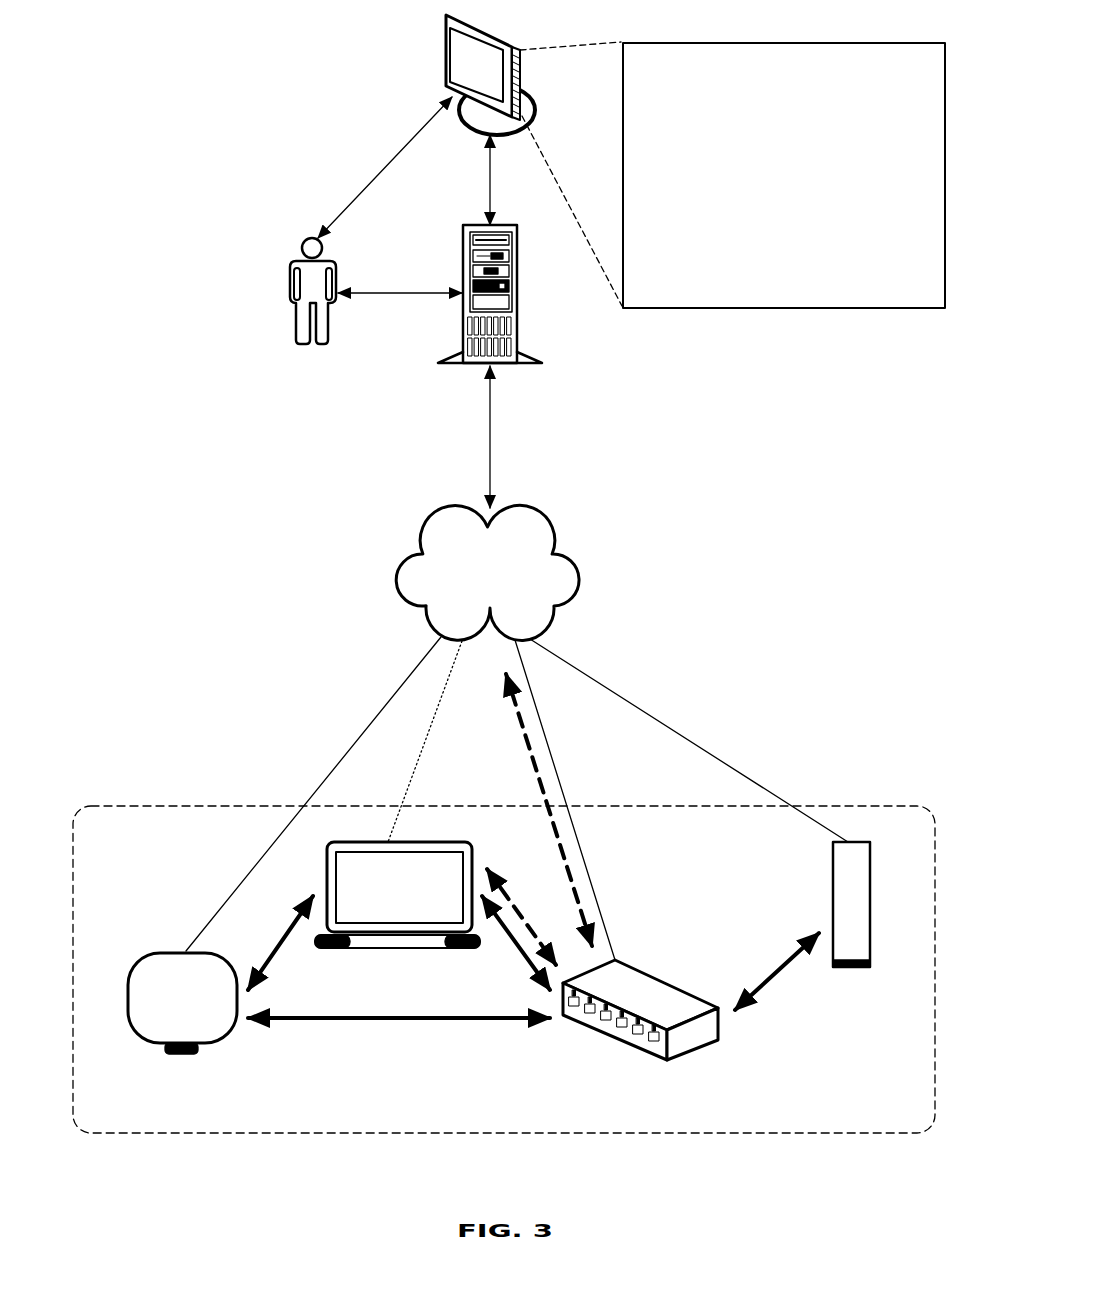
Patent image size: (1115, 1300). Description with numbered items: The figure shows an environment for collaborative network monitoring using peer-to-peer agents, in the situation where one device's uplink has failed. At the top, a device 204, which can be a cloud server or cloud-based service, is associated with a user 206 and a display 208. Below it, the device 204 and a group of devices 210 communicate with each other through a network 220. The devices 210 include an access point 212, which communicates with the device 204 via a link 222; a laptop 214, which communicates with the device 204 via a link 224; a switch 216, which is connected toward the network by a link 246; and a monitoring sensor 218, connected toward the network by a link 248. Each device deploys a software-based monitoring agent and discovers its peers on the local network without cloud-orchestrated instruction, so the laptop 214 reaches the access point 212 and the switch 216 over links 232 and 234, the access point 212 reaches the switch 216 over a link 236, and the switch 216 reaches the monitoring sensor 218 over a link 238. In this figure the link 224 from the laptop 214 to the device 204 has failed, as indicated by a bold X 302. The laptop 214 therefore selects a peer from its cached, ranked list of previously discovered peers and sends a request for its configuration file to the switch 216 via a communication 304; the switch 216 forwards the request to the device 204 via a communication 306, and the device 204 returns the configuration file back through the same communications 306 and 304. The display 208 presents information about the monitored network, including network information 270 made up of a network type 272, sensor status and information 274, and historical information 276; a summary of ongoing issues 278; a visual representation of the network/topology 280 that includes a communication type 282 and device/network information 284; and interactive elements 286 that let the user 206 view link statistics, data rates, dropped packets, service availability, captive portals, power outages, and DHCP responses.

The device 204 is at (441, 362).
The user 206 is at (290, 281).
The display 208 is at (442, 33).
The devices 210 is at (92, 1136).
The access point 212 is at (183, 1055).
The laptop 214 is at (398, 949).
The switch 216 is at (667, 1062).
The monitoring sensor 218 is at (850, 968).
The network 220 is at (546, 585).
The link 222 is at (371, 718).
The link 224 is at (409, 786).
The link 232 is at (275, 947).
The link 234 is at (520, 960).
The link 236 is at (392, 1022).
The link 238 is at (775, 970).
The connection between network and switch 246 is at (553, 764).
The connection between network and monitoring sensor 248 is at (675, 728).
The network information 270 is at (878, 76).
The network type 272 is at (830, 100).
The sensor status and information 274 is at (920, 124).
The historical information 276 is at (840, 148).
The summary of ongoing issues 278 is at (935, 171).
The visual representation of the network/topology 280 is at (840, 220).
The communication type 282 is at (887, 244).
The device/network information 284 is at (890, 268).
The interactive elements 286 is at (878, 291).
The bold X 302 is at (447, 738).
The communication 304 is at (490, 868).
The communication 306 is at (540, 778).